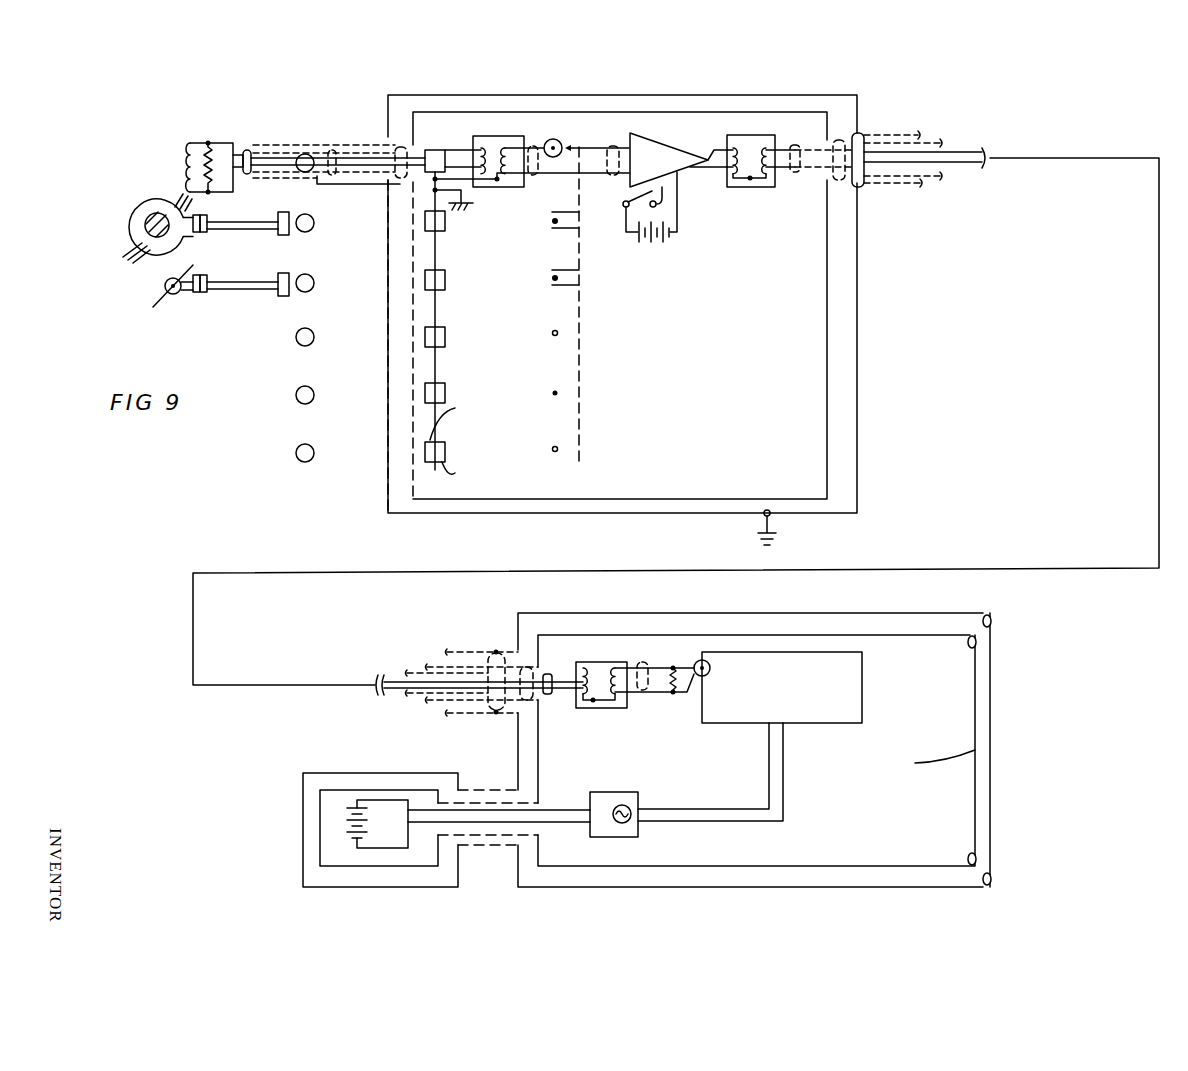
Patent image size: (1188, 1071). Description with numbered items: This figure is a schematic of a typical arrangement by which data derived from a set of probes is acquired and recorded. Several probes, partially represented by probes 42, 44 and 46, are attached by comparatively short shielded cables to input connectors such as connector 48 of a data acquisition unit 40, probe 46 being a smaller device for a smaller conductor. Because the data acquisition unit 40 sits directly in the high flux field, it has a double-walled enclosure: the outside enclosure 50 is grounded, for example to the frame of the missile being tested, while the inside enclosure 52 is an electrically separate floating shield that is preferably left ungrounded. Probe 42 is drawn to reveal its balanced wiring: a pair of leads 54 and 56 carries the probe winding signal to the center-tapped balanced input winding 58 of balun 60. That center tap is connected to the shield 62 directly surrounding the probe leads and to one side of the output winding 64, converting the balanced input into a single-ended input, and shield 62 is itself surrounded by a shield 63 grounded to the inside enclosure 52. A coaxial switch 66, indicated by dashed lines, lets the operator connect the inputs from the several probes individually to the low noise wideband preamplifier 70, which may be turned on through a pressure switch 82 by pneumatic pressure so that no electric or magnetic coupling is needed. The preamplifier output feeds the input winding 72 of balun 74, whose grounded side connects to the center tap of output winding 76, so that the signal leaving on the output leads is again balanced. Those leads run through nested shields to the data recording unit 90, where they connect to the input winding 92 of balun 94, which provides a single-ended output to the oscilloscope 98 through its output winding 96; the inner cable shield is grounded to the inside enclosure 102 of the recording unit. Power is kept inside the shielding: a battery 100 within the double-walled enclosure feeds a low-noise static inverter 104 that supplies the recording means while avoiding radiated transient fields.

The data acquisition unit 40 is at (872, 339).
The probe 42 is at (182, 154).
The probe 44 is at (130, 228).
The probe 46 is at (165, 286).
The connector 48 is at (430, 150).
The outside enclosure 50 is at (858, 454).
The inside enclosure 52 is at (827, 332).
The lead 54 is at (360, 147).
The lead 56 is at (360, 176).
The balanced input winding 58 is at (477, 140).
The balun 60 is at (497, 136).
The shield 62 is at (254, 172).
The shield 63 is at (272, 145).
The output winding 64 is at (518, 136).
The coaxial switch 66 is at (580, 300).
The low noise wideband preamplifier 70 is at (656, 133).
The input winding 72 is at (735, 136).
The balun 74 is at (757, 136).
The output winding 76 is at (762, 143).
The pressure switch 82 is at (667, 207).
The data recording unit 90 is at (537, 900).
The input winding 92 is at (577, 665).
The balun 94 is at (601, 708).
The output winding 96 is at (628, 708).
The oscilloscope 98 is at (857, 674).
The battery 100 is at (375, 812).
The inside enclosure 102 is at (863, 866).
The static inverter 104 is at (633, 798).